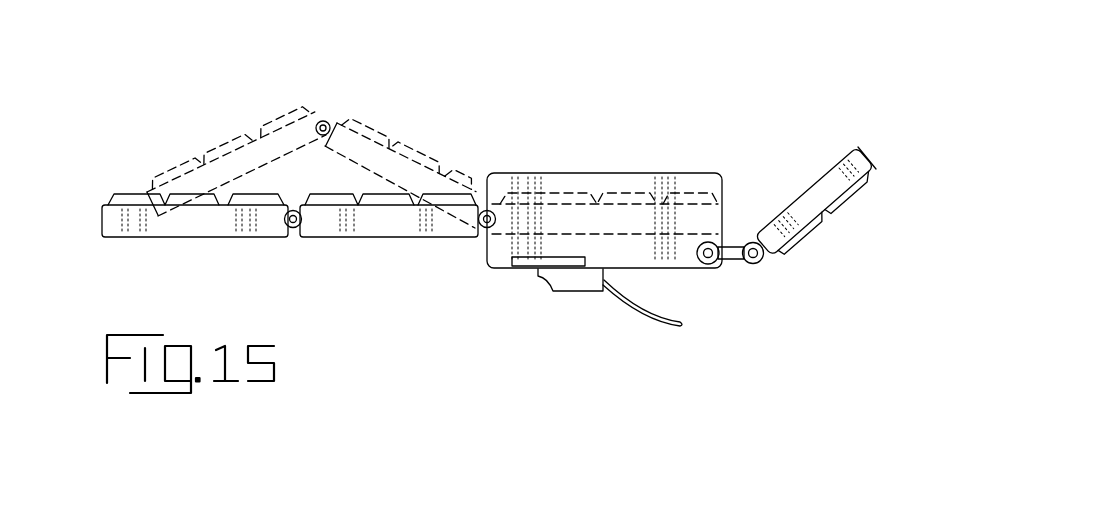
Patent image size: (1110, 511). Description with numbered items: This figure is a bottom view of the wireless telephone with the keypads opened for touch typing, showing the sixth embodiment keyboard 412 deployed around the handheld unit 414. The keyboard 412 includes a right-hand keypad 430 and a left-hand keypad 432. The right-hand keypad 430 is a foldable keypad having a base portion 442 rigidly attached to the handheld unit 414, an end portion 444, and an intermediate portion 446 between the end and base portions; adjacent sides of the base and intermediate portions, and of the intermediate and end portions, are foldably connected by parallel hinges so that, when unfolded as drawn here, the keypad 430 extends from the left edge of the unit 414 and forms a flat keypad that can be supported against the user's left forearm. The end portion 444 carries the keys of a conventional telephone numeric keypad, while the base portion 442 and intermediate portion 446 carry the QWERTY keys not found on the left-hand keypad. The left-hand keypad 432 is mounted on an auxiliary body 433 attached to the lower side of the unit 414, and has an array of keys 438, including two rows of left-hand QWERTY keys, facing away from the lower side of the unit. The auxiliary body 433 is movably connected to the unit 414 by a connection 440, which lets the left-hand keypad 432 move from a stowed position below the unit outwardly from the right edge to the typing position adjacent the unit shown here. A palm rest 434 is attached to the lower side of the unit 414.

The keyboard 412 is at (390, 280).
The handheld unit 414 is at (523, 173).
The right-hand keypad 430 is at (166, 252).
The left-hand keypad 432 is at (815, 245).
The auxiliary body 433 is at (860, 254).
The palm rest 434 is at (630, 314).
The keys 438 is at (883, 175).
The connection 440 is at (736, 258).
The base portion 442 is at (655, 242).
The end portion 444 is at (250, 240).
The intermediate portion 446 is at (369, 240).